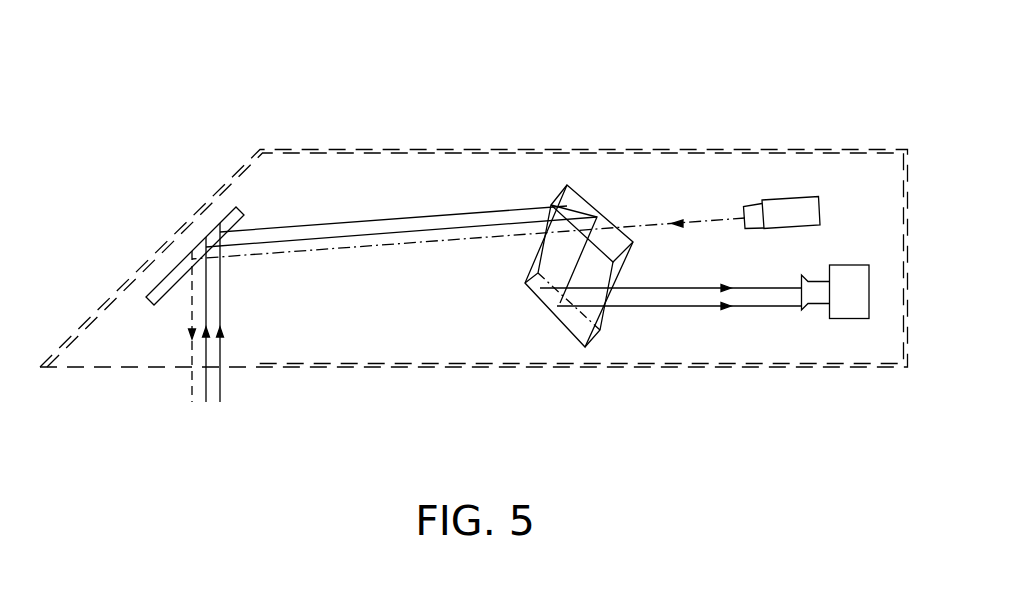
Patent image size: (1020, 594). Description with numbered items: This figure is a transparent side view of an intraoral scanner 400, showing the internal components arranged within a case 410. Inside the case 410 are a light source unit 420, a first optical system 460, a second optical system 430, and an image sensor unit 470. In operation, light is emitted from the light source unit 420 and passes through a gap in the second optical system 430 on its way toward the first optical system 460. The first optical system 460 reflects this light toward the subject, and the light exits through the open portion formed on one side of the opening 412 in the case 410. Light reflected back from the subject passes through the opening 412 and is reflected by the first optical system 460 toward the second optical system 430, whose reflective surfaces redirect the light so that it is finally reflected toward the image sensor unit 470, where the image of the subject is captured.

The intraoral scanner 400 is at (138, 123).
The case 410 is at (357, 150).
The opening 412 is at (132, 368).
The light source unit 420 is at (790, 198).
The second optical system 430 is at (588, 203).
The first optical system 460 is at (190, 253).
The image sensor unit 470 is at (848, 318).